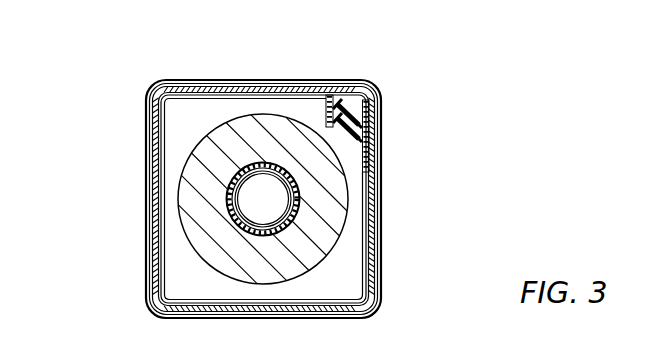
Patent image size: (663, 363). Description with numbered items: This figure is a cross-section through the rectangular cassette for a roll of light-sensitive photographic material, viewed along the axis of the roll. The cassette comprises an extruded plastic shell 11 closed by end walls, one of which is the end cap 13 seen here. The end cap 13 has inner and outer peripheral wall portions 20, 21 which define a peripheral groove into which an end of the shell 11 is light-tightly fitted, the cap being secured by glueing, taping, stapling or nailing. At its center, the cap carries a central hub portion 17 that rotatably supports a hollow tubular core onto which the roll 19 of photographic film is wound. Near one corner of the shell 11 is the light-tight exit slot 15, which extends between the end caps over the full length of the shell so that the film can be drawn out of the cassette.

The shell 11 is at (147, 117).
The end cap 13 is at (185, 103).
The light-tight exit slot 15 is at (353, 80).
The central hub portion 17 is at (262, 185).
The roll of photographic film 19 is at (345, 198).
The inner peripheral wall portion 20 is at (160, 232).
The outer peripheral wall portion 21 is at (152, 178).